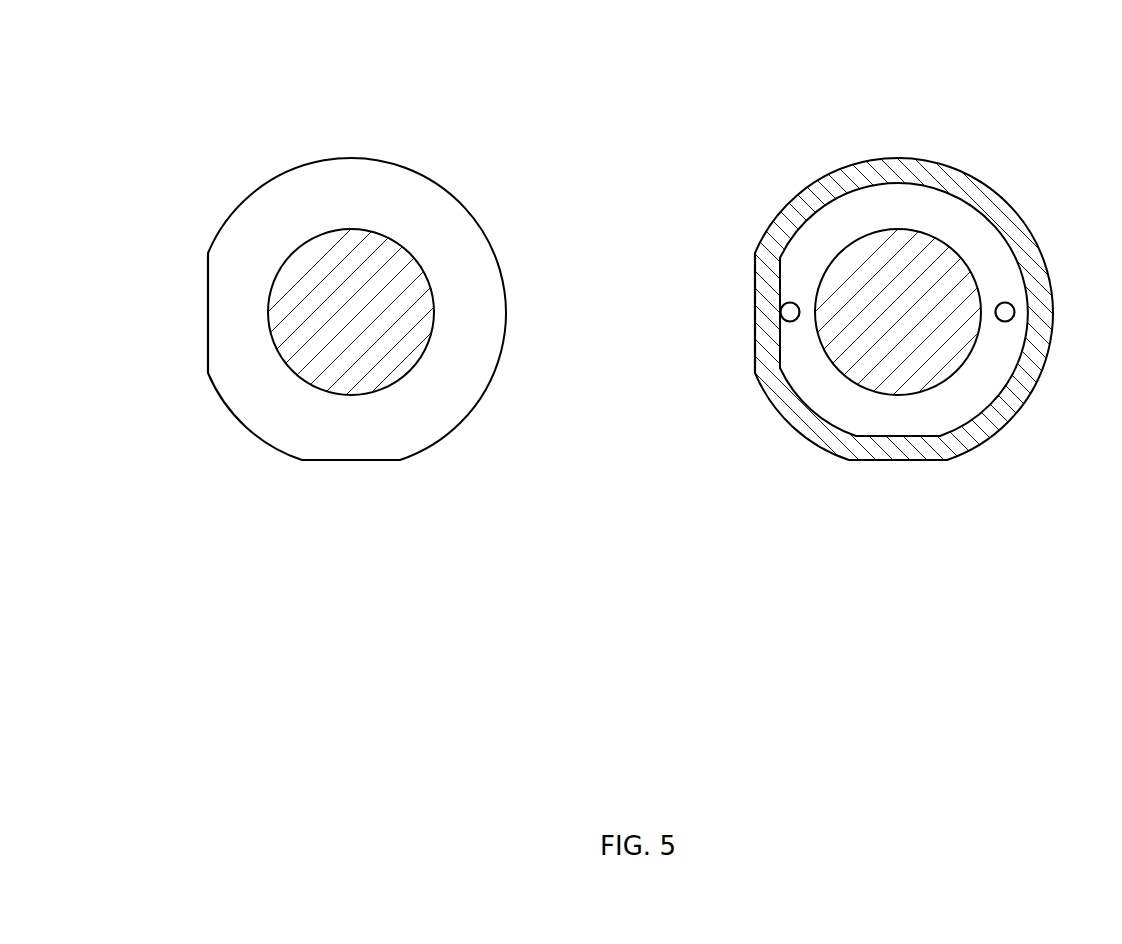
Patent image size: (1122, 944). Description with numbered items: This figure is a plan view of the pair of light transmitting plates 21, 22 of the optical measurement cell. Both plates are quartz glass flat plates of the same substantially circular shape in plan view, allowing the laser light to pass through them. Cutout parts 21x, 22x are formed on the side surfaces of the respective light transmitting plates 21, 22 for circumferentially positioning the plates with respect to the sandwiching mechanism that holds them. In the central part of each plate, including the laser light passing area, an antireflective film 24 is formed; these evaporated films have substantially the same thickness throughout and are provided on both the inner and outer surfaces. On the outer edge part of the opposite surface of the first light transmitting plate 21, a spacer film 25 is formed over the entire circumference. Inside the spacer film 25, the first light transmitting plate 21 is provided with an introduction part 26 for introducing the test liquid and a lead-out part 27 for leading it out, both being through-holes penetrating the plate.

The first light transmitting plate 21 is at (898, 157).
The cutout part 21x is at (757, 280).
The light transmitting plate 22 is at (351, 157).
The cutout part 22x is at (208, 305).
The antireflective film 24 is at (408, 247).
The spacer film 25 is at (820, 192).
The introduction part 26 is at (1012, 320).
The lead-out part 27 is at (790, 322).